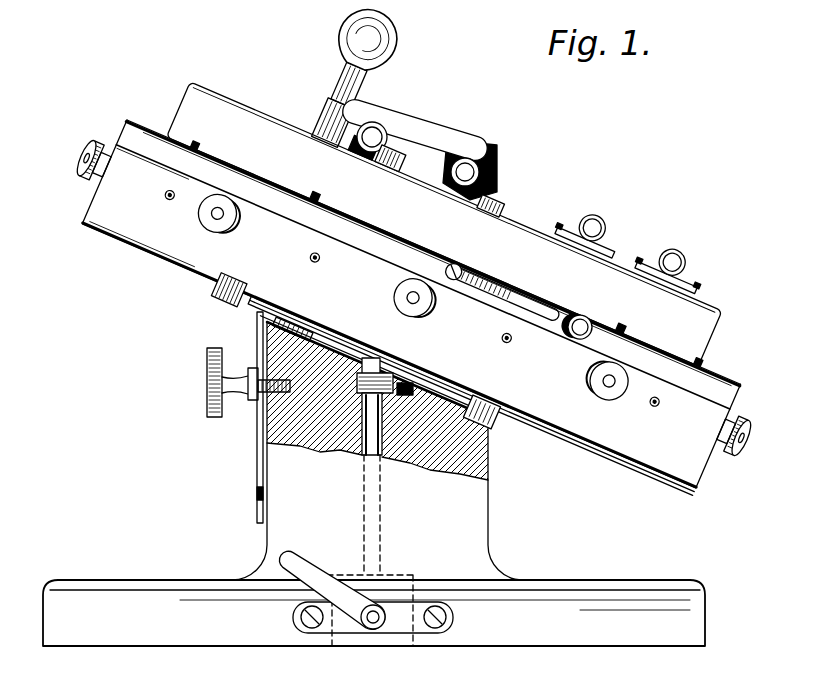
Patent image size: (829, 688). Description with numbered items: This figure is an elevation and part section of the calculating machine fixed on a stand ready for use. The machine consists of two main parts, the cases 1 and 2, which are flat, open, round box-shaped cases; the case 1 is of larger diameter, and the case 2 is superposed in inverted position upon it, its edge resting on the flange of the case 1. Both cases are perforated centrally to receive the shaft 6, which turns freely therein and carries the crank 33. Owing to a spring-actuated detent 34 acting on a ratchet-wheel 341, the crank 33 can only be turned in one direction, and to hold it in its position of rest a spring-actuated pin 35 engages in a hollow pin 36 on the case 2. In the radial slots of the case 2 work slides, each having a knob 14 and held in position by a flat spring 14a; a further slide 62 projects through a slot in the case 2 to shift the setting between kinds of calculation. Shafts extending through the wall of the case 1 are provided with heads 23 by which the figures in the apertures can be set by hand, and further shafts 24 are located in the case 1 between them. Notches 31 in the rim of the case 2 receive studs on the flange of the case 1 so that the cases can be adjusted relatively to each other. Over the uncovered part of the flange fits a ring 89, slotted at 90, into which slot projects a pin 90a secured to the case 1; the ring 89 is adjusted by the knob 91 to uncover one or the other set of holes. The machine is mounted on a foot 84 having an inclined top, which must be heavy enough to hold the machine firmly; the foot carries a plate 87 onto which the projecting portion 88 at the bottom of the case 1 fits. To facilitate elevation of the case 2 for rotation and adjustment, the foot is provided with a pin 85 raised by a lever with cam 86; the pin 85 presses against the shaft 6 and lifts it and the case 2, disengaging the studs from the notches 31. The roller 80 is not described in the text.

The case 1 is at (102, 222).
The case 2 is at (203, 100).
The shaft 6 is at (397, 370).
The knob 14 is at (500, 167).
The flat spring 14a is at (695, 290).
The heads 23 is at (88, 176).
The shafts 24 is at (316, 262).
The notches 31 is at (322, 190).
The crank 33 is at (397, 53).
The spring-actuated detent 34 is at (410, 173).
The ratchet-wheel 341 is at (500, 205).
The spring-actuated pin 35 is at (327, 83).
The hollow pin 36 is at (325, 115).
The slide 62 is at (377, 137).
The roller 80 is at (215, 292).
The foot 84 is at (270, 528).
The pin 85 is at (383, 523).
The lever with cam 86 is at (343, 627).
The plate 87 is at (497, 428).
The projecting portion 88 is at (458, 384).
The ring 89 is at (125, 137).
The slot 90 is at (522, 280).
The pin 90a is at (463, 255).
The knob 91 is at (572, 343).